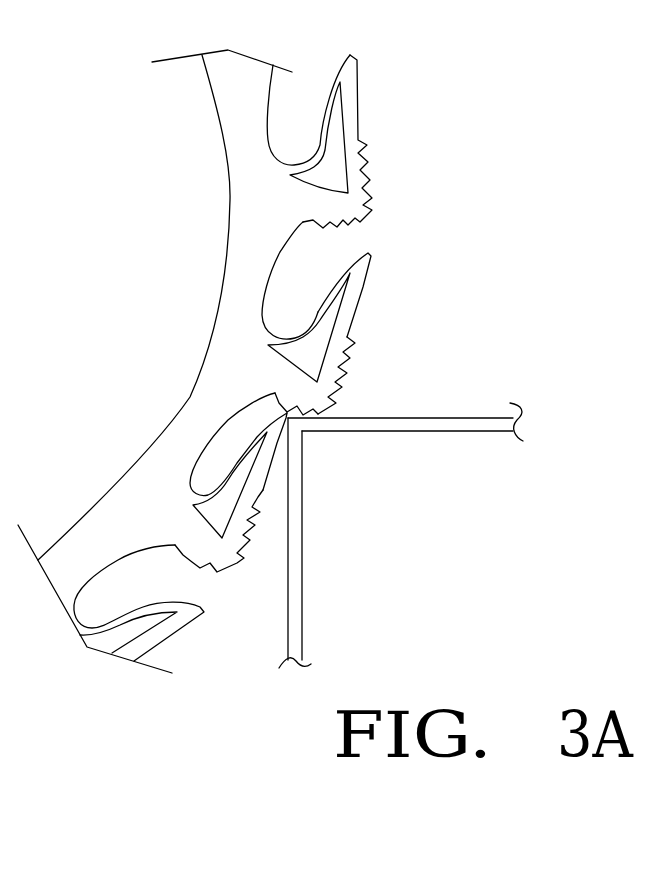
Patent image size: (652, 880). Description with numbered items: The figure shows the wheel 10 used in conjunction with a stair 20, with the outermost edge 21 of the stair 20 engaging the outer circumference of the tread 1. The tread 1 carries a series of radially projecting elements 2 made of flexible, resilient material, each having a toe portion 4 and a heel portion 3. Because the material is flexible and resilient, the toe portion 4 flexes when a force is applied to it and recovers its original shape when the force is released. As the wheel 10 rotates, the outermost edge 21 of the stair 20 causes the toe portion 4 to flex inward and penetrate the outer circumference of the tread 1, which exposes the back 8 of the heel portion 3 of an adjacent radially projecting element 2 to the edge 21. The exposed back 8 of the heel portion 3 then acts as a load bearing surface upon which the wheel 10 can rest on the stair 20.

The tread 1 is at (268, 121).
The radially projecting element 2 is at (283, 337).
The heel portion 3 is at (345, 373).
The toe portion 4 is at (373, 253).
The back of the heel portion 8 is at (304, 420).
The wheel 10 is at (72, 299).
The stair 20 is at (401, 535).
The outermost edge of the stair 21 is at (290, 442).